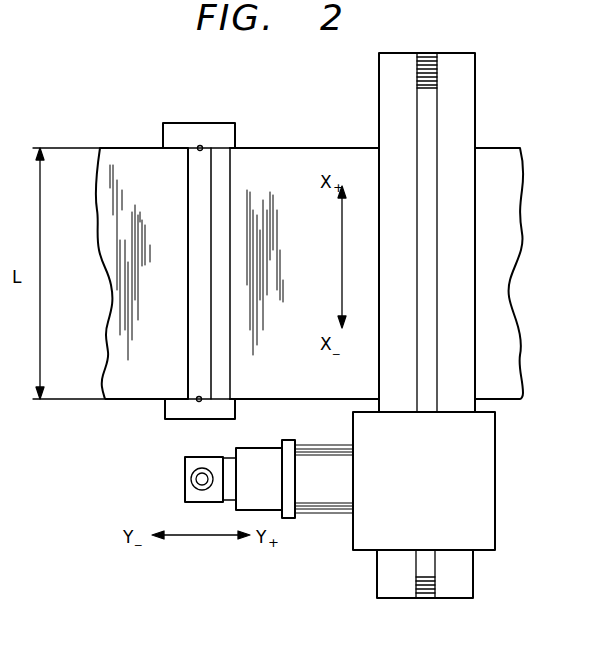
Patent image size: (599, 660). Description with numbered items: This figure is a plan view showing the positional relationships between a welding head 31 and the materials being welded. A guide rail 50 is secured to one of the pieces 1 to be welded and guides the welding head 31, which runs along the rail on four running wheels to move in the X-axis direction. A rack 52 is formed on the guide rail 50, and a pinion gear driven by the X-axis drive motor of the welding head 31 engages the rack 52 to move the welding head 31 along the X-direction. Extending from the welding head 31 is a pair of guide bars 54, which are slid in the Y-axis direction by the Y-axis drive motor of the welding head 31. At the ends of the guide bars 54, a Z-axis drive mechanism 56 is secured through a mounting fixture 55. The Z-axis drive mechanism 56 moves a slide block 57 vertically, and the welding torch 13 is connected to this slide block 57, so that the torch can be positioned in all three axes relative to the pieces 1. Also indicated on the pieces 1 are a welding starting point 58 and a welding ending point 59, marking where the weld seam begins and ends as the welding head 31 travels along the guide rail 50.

The pieces to be welded 1 is at (520, 178).
The welding torch 13 is at (191, 485).
The welding head 31 is at (495, 488).
The guide rail 50 is at (475, 97).
The rack 52 is at (436, 567).
The guide bars 54 is at (323, 443).
The mounting fixture 55 is at (291, 520).
The Z-axis drive mechanism 56 is at (272, 448).
The slide block 57 is at (230, 457).
The welding starting point 58 is at (197, 403).
The welding ending point 59 is at (204, 143).